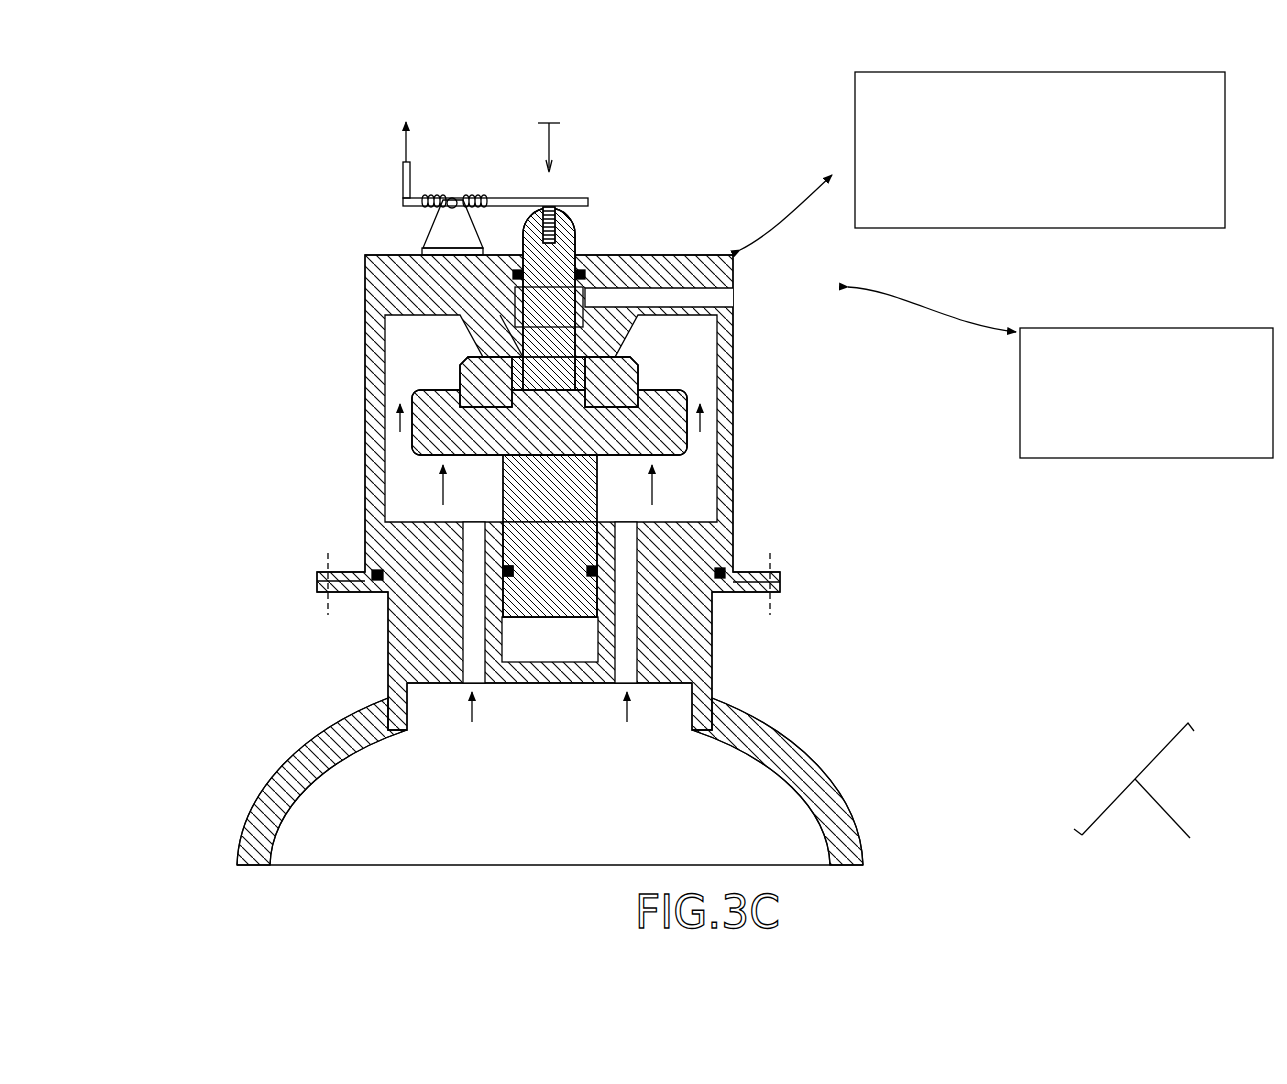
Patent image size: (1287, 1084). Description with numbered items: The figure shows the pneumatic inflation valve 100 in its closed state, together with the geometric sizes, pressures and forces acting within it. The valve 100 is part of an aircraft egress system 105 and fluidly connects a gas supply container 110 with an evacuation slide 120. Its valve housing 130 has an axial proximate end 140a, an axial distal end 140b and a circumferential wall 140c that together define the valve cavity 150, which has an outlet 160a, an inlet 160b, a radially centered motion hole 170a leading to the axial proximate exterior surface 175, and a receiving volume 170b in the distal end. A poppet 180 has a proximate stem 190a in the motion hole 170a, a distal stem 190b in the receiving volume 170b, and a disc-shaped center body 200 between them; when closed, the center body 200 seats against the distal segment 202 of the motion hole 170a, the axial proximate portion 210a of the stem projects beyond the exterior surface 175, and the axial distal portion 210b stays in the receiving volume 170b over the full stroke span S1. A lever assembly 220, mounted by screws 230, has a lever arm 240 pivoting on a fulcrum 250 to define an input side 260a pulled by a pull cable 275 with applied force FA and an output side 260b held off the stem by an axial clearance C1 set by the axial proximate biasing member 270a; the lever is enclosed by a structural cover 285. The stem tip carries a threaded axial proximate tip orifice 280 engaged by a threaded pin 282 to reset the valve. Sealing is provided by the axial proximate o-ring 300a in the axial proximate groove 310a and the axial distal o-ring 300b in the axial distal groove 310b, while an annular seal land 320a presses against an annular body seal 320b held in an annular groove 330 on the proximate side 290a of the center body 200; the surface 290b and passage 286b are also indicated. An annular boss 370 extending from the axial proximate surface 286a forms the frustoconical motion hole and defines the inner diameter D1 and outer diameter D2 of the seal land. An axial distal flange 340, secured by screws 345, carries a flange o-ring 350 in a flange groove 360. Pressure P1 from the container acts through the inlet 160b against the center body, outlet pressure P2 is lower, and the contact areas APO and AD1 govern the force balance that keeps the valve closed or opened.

The valve 100 is at (233, 198).
The egress system 105 is at (1151, 794).
The gas supply container 110 is at (550, 781).
The evacuation slide 120 is at (1113, 458).
The valve housing 130 is at (742, 428).
The axial proximate end 140a is at (440, 285).
The axial distal end 140b is at (650, 602).
The circumferential wall 140c is at (365, 408).
The valve cavity 150 is at (623, 582).
The outlet 160a is at (720, 310).
The inlet 160b is at (622, 690).
The motion hole 170a is at (549, 307).
The receiving volume 170b is at (600, 640).
The axial proximate exterior surface 175 is at (700, 255).
The poppet 180 is at (520, 455).
The proximate stem 190a is at (549, 299).
The distal stem 190b is at (550, 536).
The center body 200 is at (549, 422).
The distal segment 202 is at (497, 345).
The axial proximate portion 210a is at (592, 212).
The axial distal portion 210b is at (600, 568).
The lever assembly 220 is at (477, 195).
The screws 230 is at (420, 250).
The lever arm 240 is at (497, 200).
The fulcrum 250 is at (452, 227).
The input side 260a is at (403, 200).
The output side 260b is at (576, 200).
The axial proximate biasing member 270a is at (432, 195).
The pull cable 275 is at (403, 180).
The axial proximate tip orifice 280 is at (570, 228).
The threaded pin 282 is at (552, 152).
The structural cover 285 is at (1095, 228).
The axial proximate surface 286a is at (700, 330).
The inlet passage 286b is at (700, 515).
The proximate side 290a is at (460, 375).
The lower passage 290b is at (440, 462).
The axial proximate o-ring 300a is at (586, 274).
The axial distal o-ring 300b is at (372, 572).
The axial proximate groove 310a is at (513, 274).
The axial distal groove 310b is at (580, 568).
The annular seal land 320a is at (462, 345).
The annular body seal 320b is at (640, 380).
The annular groove 330 is at (582, 400).
The axial distal flange 340 is at (782, 590).
The screws 345 is at (320, 600).
The flange o-ring 350 is at (714, 598).
The flange groove 360 is at (380, 598).
The annular boss 370 is at (626, 324).
The inner diameter D1 is at (600, 368).
The outer diameter D2 is at (590, 392).
The pressure P1 is at (567, 715).
The pressure P2 is at (720, 297).
The stroke span S1 is at (570, 583).
The axial clearance C1 is at (592, 207).
The applied force FA is at (390, 133).
The contact surface area APO is at (615, 372).
The contact surface area AD1 is at (605, 568).